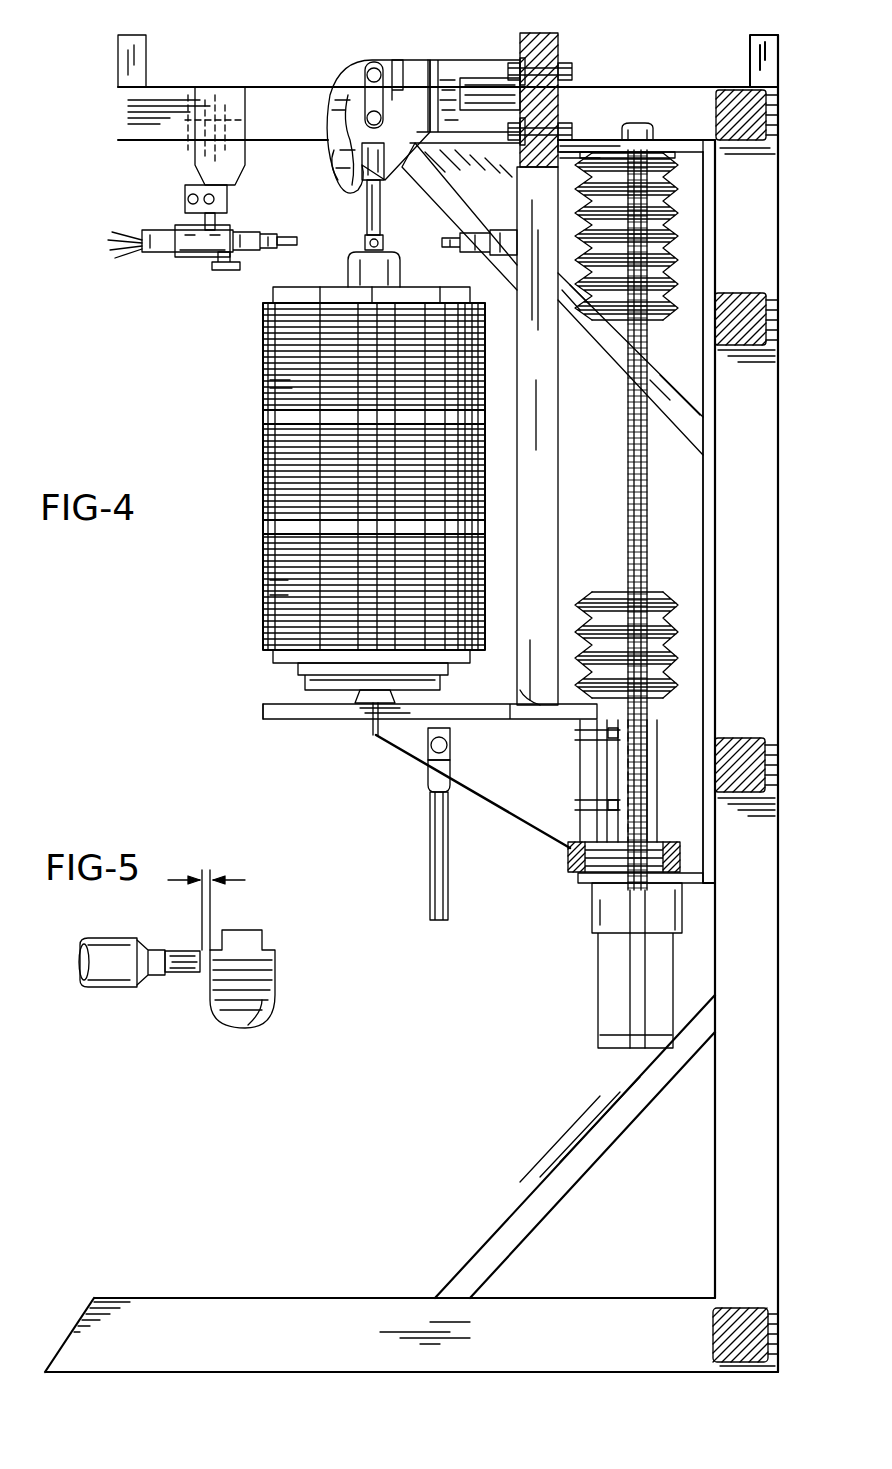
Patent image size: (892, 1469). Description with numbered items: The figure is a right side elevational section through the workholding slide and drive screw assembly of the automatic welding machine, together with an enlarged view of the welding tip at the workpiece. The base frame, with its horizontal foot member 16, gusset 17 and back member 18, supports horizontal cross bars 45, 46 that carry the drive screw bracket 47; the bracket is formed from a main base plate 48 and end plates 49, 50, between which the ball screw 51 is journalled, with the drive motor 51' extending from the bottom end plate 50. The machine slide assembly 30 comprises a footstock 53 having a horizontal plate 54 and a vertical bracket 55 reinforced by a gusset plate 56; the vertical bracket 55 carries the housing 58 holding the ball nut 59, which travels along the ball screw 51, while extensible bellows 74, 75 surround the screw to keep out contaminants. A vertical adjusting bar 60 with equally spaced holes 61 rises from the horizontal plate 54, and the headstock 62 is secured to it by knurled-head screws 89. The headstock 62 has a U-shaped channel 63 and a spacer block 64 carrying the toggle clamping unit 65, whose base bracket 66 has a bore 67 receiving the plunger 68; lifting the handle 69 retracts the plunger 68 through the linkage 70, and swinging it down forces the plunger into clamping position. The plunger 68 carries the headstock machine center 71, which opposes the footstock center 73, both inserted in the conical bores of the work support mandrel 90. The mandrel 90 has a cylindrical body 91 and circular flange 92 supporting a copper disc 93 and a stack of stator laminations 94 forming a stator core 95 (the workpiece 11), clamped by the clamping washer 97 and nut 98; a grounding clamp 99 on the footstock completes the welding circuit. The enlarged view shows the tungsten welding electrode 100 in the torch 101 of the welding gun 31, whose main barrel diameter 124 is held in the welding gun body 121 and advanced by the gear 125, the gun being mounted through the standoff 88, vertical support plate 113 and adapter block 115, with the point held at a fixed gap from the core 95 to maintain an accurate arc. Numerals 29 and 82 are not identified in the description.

In FIG. 4, the workpiece 11 is at (255, 437).
In FIG. 4, the horizontal foot member 16 is at (347, 1298).
In FIG. 4, the gusset 17 is at (572, 1165).
In FIG. 4, the back member 18 is at (740, 95).
In FIG. 4, the upper post 29 is at (135, 35).
In FIG. 4, the machine slide assembly 30 is at (262, 720).
In FIG. 4, the welding gun 31 is at (143, 225).
In FIG. 4, the horizontal cross bar 45 is at (740, 305).
In FIG. 4, the horizontal cross bar 46 is at (748, 758).
In FIG. 4, the drive screw bracket 47 is at (727, 603).
In FIG. 4, the main base plate 48 is at (705, 555).
In FIG. 4, the end plate 49 is at (680, 140).
In FIG. 4, the bottom end plate 50 is at (690, 883).
In FIG. 4, the ball screw 51 is at (616, 520).
In FIG. 4, the drive motor 51' is at (603, 965).
In FIG. 4, the footstock 53 is at (380, 737).
In FIG. 4, the horizontal plate 54 is at (290, 719).
In FIG. 4, the vertical bracket 55 is at (583, 795).
In FIG. 4, the gusset plate 56 is at (500, 800).
In FIG. 4, the housing 58 is at (640, 800).
In FIG. 4, the ball nut 59 is at (610, 765).
In FIG. 4, the vertical adjusting bar 60 is at (542, 490).
In FIG. 4, the holes 61 is at (520, 167).
In FIG. 4, the headstock 62 is at (360, 55).
In FIG. 4, the U-shaped channel 63 is at (518, 62).
In FIG. 4, the spacer block 64 is at (468, 60).
In FIG. 4, the clamping unit 65 is at (325, 160).
In FIG. 4, the base bracket 66 is at (435, 60).
In FIG. 4, the bore 67 is at (345, 125).
In FIG. 4, the plunger 68 is at (380, 205).
In FIG. 4, the handle 69 is at (335, 85).
In FIG. 4, the linkage 70 is at (380, 85).
In FIG. 4, the machine center 71 is at (385, 240).
In FIG. 4, the machine center 73 is at (382, 735).
In FIG. 4, the extensible bellows 74 is at (680, 212).
In FIG. 4, the extensible bellows 75 is at (568, 858).
In FIG. 4, the column foot 82 is at (518, 705).
In FIG. 4, the standoff 88 is at (192, 115).
In FIG. 4, the knurled-head screws 89 is at (566, 65).
In FIG. 4, the work support mandrel 90 is at (298, 680).
In FIG. 4, the cylindrical body 91 is at (318, 605).
In FIG. 4, the circular flange 92 is at (270, 660).
In FIG. 4, the copper disc 93 is at (285, 310).
In FIG. 4, the stator laminations 94 is at (290, 388).
In FIG. 5, the stator laminations 94 is at (268, 1005).
In FIG. 4, the stator core 95 is at (237, 432).
In FIG. 5, the stator core 95 is at (207, 1010).
In FIG. 4, the clamping washer 97 is at (318, 287).
In FIG. 4, the nut 98 is at (400, 268).
In FIG. 4, the grounding clamp 99 is at (430, 830).
In FIG. 5, the tungsten welding electrode 100 is at (190, 975).
In FIG. 4, the welding gun torch 101 is at (290, 238).
In FIG. 5, the welding gun torch 101 is at (152, 951).
In FIG. 4, the vertical support plate 113 is at (228, 100).
In FIG. 4, the adapter block 115 is at (190, 190).
In FIG. 4, the welding gun body 121 is at (200, 260).
In FIG. 4, the main barrel diameter 124 is at (140, 258).
In FIG. 4, the gear 125 is at (222, 272).